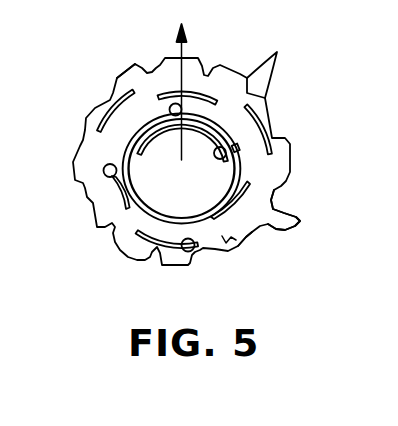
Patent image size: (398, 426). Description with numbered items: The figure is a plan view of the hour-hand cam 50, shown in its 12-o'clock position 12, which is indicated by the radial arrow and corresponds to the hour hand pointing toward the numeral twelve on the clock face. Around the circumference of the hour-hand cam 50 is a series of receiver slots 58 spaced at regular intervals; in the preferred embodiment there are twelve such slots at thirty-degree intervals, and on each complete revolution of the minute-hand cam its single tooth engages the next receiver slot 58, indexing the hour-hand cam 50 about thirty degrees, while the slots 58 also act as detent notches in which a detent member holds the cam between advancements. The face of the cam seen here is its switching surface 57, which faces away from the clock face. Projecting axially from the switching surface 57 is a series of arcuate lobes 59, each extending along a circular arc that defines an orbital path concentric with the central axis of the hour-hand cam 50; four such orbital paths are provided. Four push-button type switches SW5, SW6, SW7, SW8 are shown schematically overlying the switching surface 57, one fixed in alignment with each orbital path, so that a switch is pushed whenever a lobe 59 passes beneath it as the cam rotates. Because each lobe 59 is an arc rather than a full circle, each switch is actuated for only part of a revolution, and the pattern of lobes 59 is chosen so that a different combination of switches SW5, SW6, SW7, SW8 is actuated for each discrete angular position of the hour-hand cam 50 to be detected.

The 12-o'clock position 12 is at (183, 81).
The hour-hand cam 50 is at (72, 162).
The switching surface 57 is at (249, 238).
The receiver slots 58 is at (300, 221).
The arcuate lobes 59 is at (104, 104).
The switch SW5 is at (237, 148).
The switch SW6 is at (168, 102).
The switch SW7 is at (102, 177).
The switch SW8 is at (195, 254).